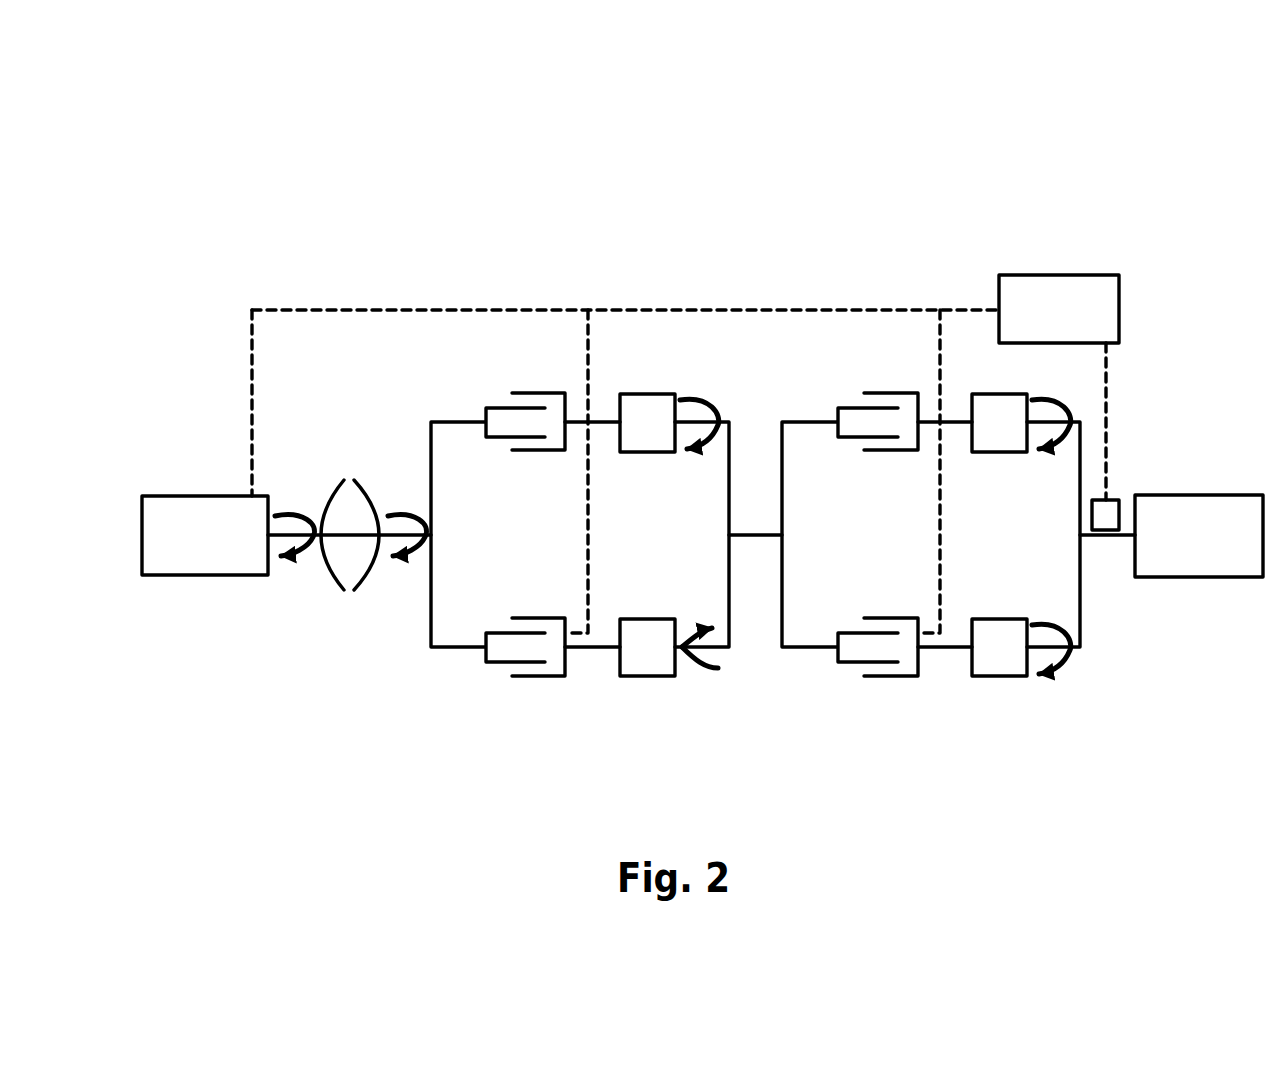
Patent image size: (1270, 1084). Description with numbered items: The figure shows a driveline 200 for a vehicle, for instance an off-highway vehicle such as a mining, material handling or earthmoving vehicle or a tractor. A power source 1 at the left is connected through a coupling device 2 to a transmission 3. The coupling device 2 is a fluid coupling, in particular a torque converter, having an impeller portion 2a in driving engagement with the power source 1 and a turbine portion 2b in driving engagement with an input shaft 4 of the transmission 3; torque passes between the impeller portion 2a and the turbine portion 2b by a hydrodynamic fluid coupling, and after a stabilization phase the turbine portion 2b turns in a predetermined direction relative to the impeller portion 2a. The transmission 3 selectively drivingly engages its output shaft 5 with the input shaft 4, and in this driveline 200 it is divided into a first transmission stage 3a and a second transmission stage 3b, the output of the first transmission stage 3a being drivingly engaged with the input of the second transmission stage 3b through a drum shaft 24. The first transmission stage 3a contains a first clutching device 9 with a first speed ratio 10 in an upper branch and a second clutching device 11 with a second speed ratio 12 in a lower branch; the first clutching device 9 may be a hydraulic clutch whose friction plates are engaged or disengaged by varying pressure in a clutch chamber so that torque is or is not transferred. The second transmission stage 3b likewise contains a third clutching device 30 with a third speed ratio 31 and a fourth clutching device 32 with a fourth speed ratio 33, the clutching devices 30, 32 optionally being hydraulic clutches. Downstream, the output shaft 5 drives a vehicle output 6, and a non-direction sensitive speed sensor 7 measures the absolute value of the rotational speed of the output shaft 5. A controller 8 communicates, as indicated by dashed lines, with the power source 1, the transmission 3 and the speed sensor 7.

The driveline 200 is at (381, 167).
The power source 1 is at (203, 578).
The coupling device 2 is at (336, 471).
The impeller portion 2a is at (328, 487).
The turbine portion 2b is at (380, 497).
The transmission 3 is at (733, 602).
The first transmission stage 3a is at (557, 570).
The second transmission stage 3b is at (914, 562).
The input shaft 4 is at (420, 562).
The output shaft 5 is at (1107, 545).
The vehicle output 6 is at (1210, 493).
The non-direction sensitive speed sensor 7 is at (1111, 498).
The controller 8 is at (1074, 273).
The first clutching device 9 is at (490, 378).
The first speed ratio 10 is at (641, 453).
The second clutching device 11 is at (496, 689).
The second speed ratio 12 is at (640, 678).
The drum shaft 24 is at (768, 543).
The third clutching device 30 is at (845, 375).
The third speed ratio 31 is at (1003, 455).
The fourth clutching device 32 is at (848, 690).
The fourth speed ratio 33 is at (1010, 680).